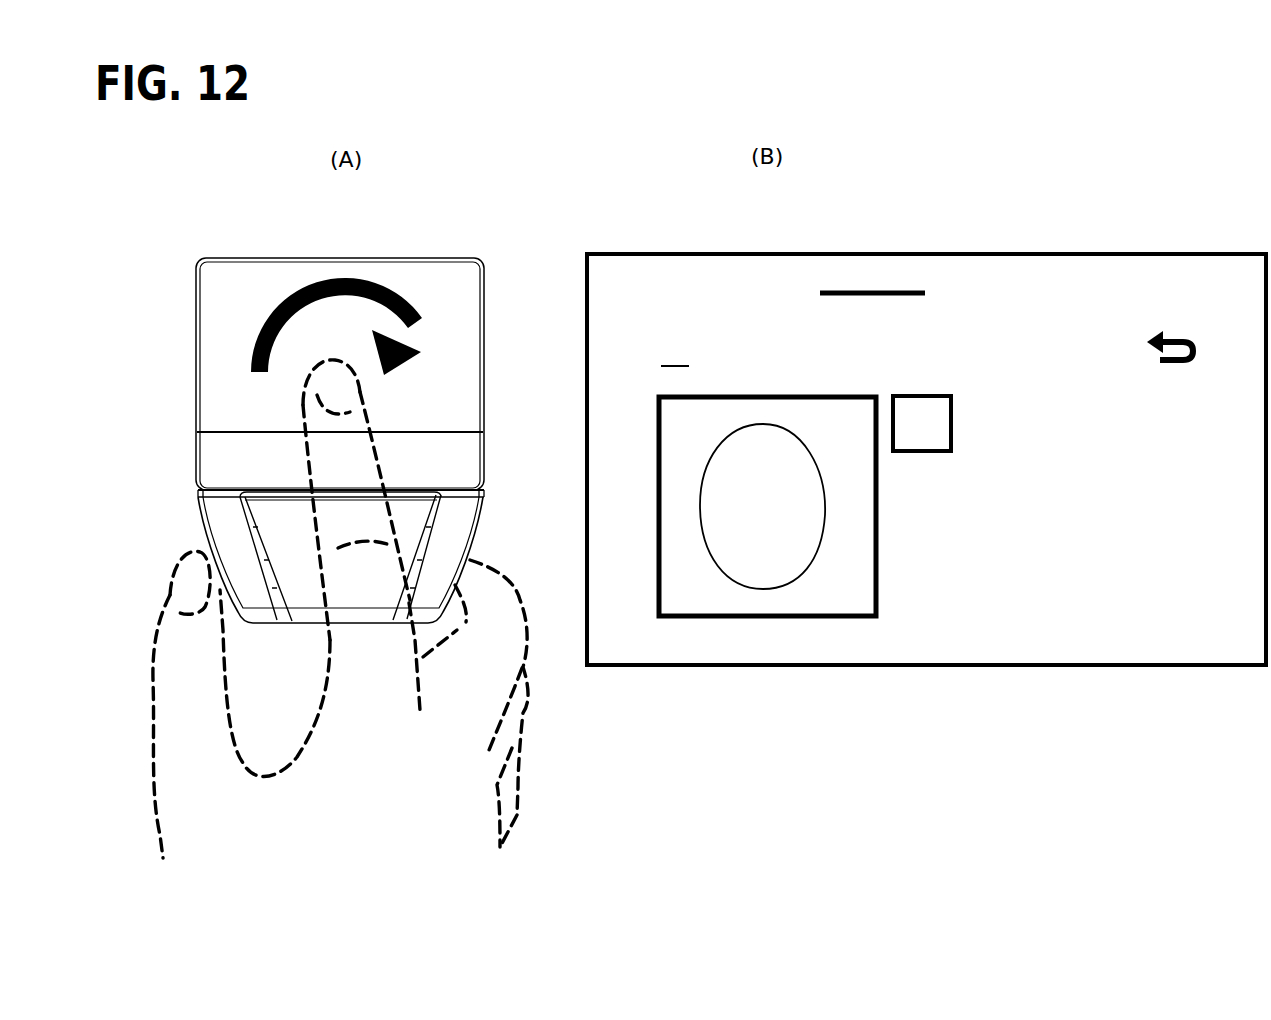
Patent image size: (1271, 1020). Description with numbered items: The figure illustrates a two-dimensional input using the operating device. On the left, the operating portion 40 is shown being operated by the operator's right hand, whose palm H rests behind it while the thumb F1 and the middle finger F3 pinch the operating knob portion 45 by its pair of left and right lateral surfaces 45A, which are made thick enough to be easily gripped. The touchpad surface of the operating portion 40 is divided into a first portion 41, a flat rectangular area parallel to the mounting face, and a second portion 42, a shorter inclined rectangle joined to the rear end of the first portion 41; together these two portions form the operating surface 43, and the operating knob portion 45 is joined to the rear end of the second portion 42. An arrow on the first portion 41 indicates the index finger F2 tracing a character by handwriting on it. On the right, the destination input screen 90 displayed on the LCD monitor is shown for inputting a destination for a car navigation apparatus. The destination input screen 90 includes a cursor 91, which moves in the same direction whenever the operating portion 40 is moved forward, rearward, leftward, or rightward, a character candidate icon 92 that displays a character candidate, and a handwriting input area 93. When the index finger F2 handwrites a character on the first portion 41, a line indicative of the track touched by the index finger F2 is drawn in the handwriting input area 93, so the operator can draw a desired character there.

The operating portion 40 is at (203, 262).
The first portion 41 is at (233, 360).
The second portion 42 is at (228, 449).
The operating surface 43 is at (153, 339).
The operating knob portion 45 is at (218, 520).
The lateral surfaces 45A is at (210, 542).
The thumb F1 is at (150, 630).
The index finger F2 is at (352, 408).
The middle finger F3 is at (470, 562).
The palm H is at (465, 822).
The destination input screen 90 is at (996, 252).
The cursor 91 is at (935, 395).
The character candidate icon 92 is at (958, 402).
The handwriting input area 93 is at (800, 405).